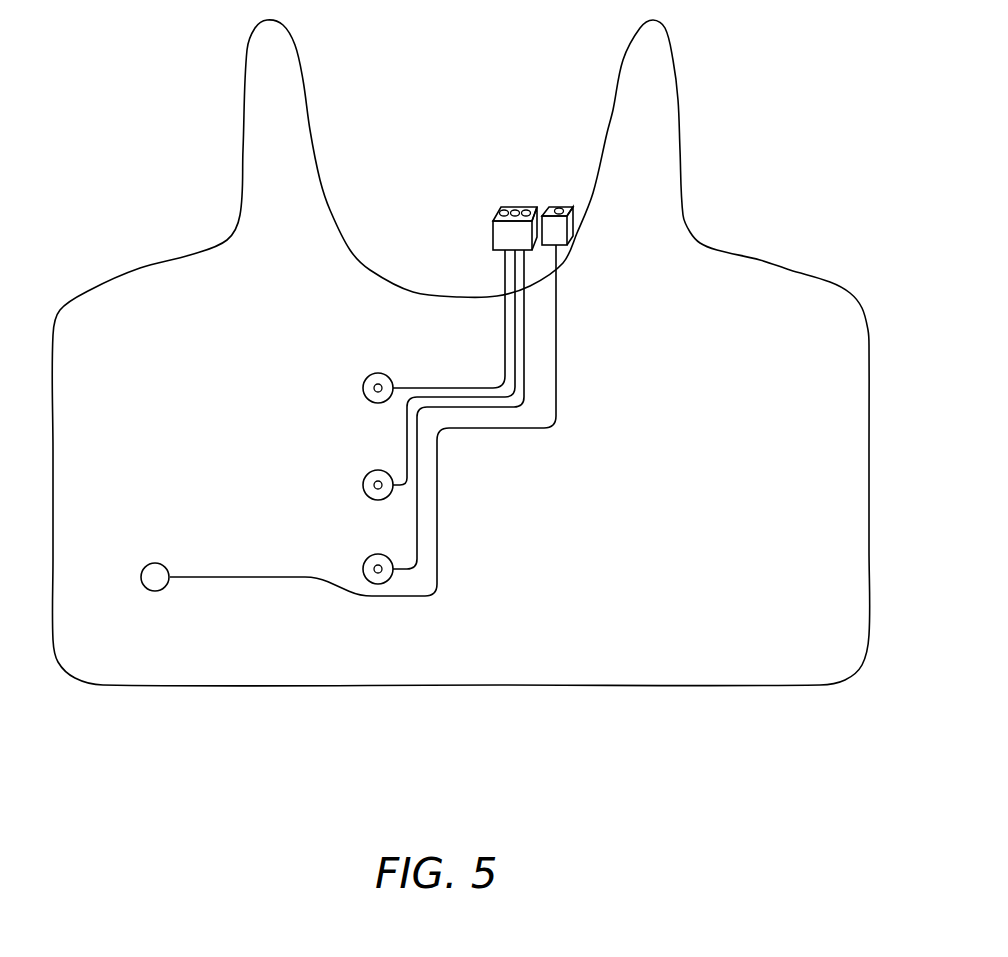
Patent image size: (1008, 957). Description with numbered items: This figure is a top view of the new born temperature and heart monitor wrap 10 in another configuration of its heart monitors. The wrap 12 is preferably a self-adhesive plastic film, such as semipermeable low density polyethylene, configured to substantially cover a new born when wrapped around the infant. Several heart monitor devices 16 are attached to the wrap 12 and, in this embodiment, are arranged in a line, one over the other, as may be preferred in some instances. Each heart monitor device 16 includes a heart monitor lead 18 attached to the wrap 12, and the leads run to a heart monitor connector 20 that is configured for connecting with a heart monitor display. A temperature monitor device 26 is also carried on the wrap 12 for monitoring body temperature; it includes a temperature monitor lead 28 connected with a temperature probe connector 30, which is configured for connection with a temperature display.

The new born temperature and heart monitor wrap 10 is at (461, 404).
The wrap 12 is at (726, 600).
The heart monitor device 16 is at (378, 417).
The heart monitor lead 18 is at (350, 466).
The heart monitor connector 20 is at (498, 212).
The temperature monitor device 26 is at (333, 461).
The temperature monitor lead 28 is at (152, 563).
The temperature probe connector 30 is at (558, 208).